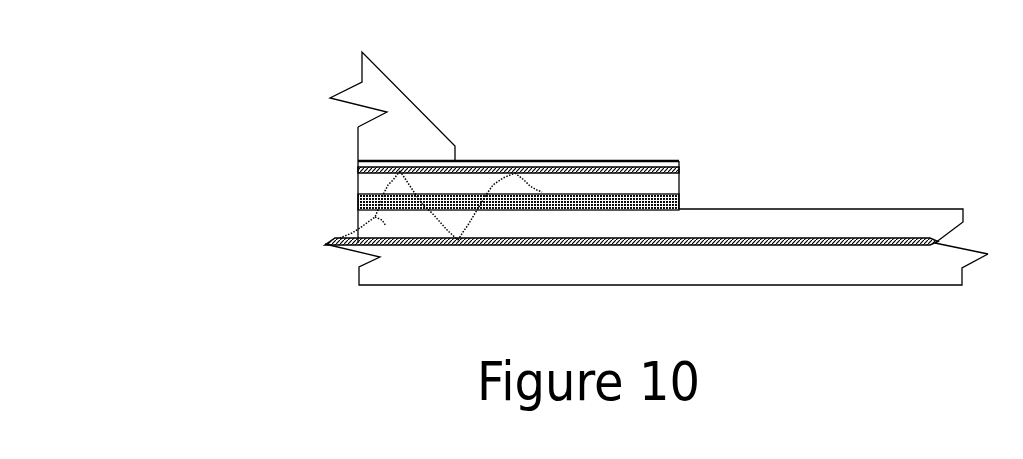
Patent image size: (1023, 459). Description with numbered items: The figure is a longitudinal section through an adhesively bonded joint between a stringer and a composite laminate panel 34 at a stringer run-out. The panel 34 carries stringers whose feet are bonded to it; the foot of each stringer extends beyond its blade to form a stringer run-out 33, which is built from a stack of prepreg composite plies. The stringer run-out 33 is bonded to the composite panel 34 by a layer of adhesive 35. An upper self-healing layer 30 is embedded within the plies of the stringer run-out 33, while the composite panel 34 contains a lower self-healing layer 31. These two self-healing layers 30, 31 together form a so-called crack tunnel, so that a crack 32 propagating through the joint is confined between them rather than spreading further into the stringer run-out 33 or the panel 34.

The upper self-healing layer 30 is at (678, 164).
The lower self-healing layer 31 is at (839, 238).
The crack 32 is at (360, 217).
The stringer run-out 33 is at (677, 180).
The composite laminate panel 34 is at (792, 208).
The layer of adhesive 35 is at (398, 127).